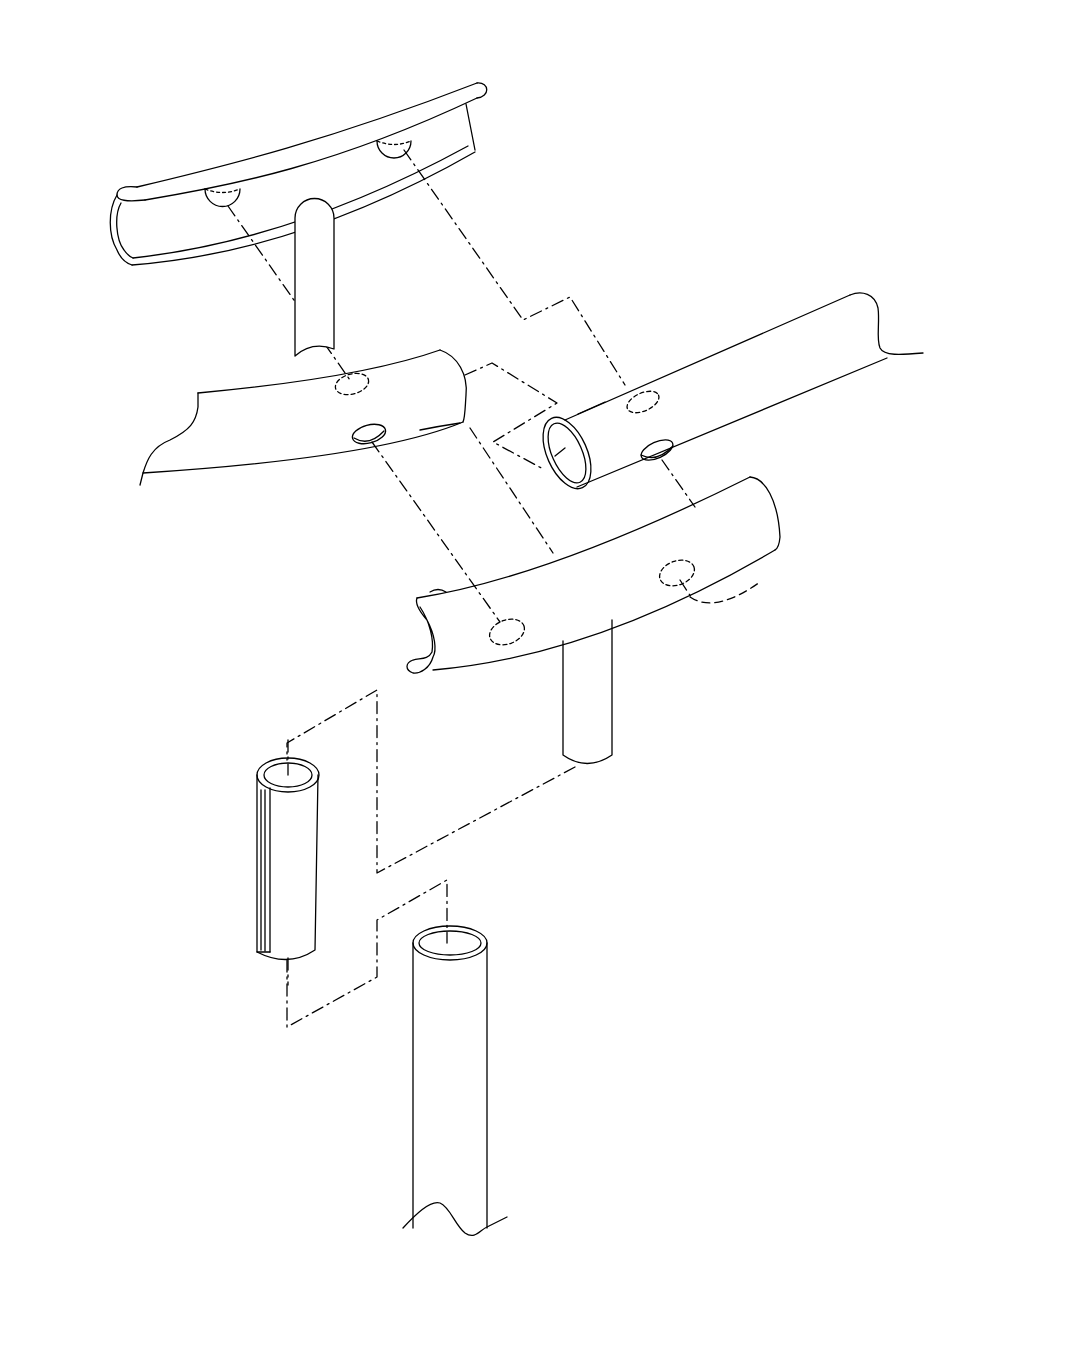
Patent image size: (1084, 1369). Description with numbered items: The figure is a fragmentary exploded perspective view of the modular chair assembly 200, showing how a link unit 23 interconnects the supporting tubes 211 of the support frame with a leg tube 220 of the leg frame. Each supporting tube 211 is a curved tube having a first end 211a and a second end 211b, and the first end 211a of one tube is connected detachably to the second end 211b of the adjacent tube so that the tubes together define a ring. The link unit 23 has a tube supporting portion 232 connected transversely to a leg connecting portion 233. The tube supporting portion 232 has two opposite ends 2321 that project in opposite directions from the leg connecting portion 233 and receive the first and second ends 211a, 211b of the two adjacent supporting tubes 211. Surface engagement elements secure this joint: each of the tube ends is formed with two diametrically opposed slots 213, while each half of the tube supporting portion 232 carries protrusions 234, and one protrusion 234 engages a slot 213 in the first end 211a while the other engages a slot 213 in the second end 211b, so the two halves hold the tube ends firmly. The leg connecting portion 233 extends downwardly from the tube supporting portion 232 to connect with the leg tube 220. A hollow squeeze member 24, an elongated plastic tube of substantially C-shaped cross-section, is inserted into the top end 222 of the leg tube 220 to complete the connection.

The modular chair assembly 200 is at (587, 100).
The link unit 23 is at (540, 207).
The supporting tube 211 is at (760, 336).
The first end 211a is at (423, 440).
The second end 211b is at (593, 403).
The slot 213 is at (363, 435).
The leg tube 220 is at (480, 1165).
The top end 222 is at (470, 927).
The tube supporting portion 232 is at (369, 120).
The opposite ends 2321 is at (737, 477).
The leg connecting portion 233 is at (313, 338).
The protrusion 234 is at (757, 583).
The hollow squeeze member 24 is at (293, 877).